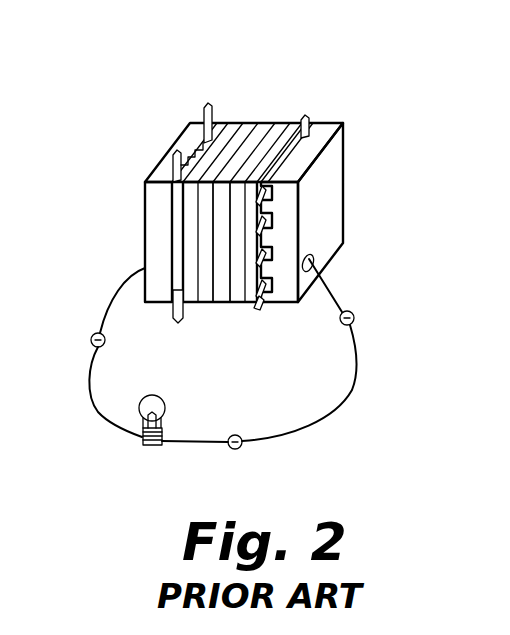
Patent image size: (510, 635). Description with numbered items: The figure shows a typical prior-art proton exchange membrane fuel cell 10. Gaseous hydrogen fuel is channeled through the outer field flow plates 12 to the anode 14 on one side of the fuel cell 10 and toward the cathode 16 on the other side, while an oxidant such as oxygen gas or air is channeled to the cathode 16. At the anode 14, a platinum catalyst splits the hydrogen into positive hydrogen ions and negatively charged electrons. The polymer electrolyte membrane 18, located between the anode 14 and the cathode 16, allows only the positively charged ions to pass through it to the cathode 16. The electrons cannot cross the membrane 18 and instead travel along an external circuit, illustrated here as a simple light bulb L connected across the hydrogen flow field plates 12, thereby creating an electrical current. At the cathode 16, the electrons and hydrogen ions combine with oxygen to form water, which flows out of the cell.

The proton exchange membrane fuel cell 10 is at (240, 270).
The outer field flow plate 12 is at (156, 277).
The anode 14 is at (208, 301).
The cathode 16 is at (235, 301).
The polymer electrolyte membrane 18 is at (224, 301).
The light bulb L is at (141, 446).